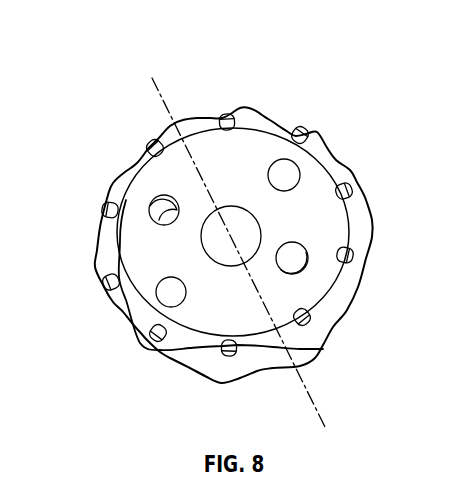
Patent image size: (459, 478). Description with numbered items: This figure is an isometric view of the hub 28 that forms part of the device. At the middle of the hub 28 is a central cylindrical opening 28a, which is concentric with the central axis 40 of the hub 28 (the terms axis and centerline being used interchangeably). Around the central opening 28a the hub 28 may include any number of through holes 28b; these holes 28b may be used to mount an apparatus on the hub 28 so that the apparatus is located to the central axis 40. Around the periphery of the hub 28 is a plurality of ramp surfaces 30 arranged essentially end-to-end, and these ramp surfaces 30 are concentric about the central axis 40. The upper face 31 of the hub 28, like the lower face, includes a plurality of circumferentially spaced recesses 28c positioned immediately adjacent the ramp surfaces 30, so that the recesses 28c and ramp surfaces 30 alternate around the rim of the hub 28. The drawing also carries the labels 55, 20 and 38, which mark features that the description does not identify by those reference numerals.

The hub 28 is at (269, 202).
The central cylindrical opening 28a is at (267, 215).
The through holes 28b is at (170, 295).
The recesses 28c is at (143, 146).
The ramp surfaces 30 is at (363, 242).
The upper face 31 is at (330, 280).
The central axis 40 is at (165, 117).
The junctions 55 is at (292, 118).
The drill bit 20 is at (352, 469).
The shank 38 is at (447, 475).